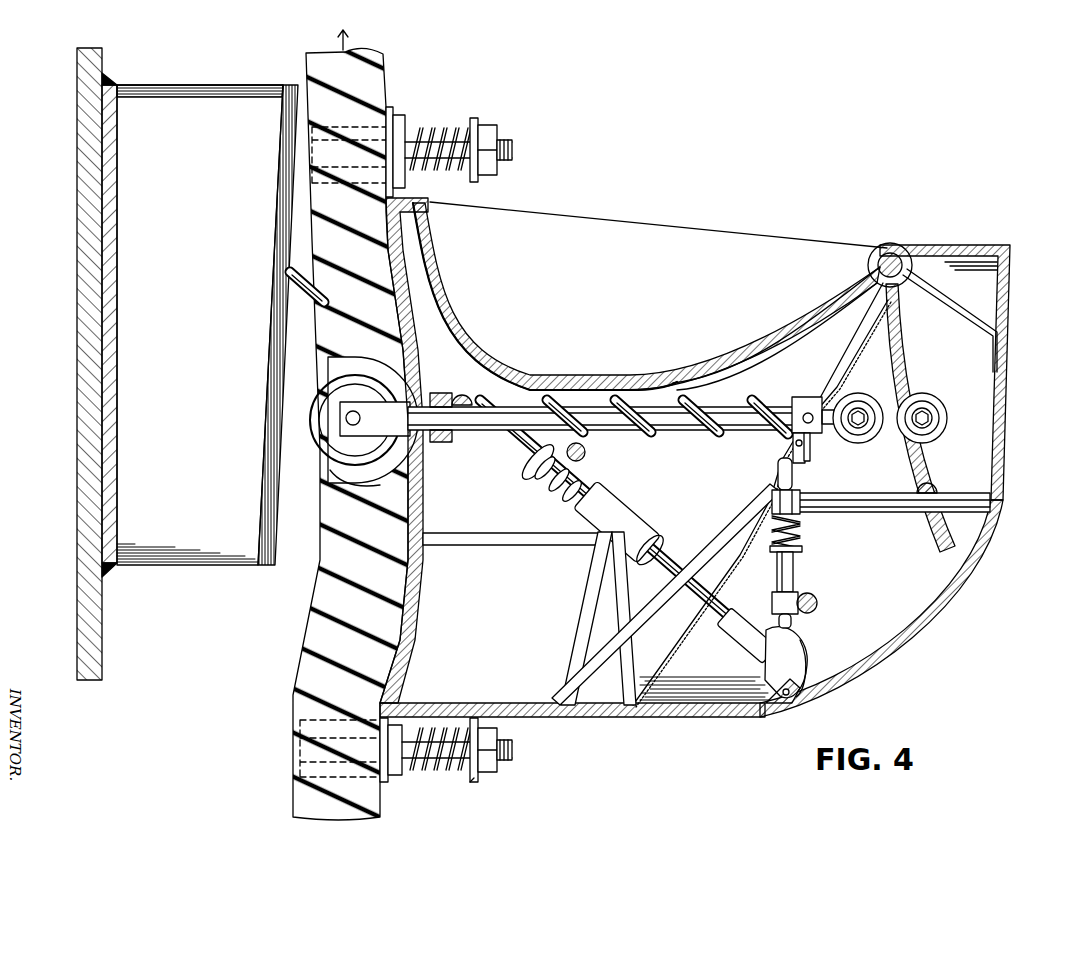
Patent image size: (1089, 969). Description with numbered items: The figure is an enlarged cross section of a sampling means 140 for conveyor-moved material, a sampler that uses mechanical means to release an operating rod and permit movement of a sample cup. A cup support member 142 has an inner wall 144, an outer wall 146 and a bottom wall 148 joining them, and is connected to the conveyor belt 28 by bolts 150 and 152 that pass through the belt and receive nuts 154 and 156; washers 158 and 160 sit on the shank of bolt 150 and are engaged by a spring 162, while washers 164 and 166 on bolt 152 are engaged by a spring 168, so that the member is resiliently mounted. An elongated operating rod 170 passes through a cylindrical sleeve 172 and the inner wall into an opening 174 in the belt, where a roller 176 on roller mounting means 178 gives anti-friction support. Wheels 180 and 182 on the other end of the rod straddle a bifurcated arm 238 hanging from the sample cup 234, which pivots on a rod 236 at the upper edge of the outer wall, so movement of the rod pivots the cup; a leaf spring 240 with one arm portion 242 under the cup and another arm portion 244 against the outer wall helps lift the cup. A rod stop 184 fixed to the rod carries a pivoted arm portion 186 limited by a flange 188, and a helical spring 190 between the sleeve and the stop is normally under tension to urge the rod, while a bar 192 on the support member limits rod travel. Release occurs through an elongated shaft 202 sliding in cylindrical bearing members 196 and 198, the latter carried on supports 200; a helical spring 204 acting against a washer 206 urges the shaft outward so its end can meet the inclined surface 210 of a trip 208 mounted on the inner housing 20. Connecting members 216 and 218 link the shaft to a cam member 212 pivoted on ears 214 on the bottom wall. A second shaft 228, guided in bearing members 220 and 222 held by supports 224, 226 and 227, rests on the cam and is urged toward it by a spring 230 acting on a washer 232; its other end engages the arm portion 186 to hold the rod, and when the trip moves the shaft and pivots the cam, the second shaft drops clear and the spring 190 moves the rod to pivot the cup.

The inner housing 20 is at (78, 92).
The conveyor belt 28 is at (386, 68).
The sampling means 140 is at (757, 182).
The cup support member 142 is at (948, 596).
The inner wall 144 is at (420, 600).
The outer wall 146 is at (1008, 442).
The bottom wall 148 is at (638, 712).
The bolt 150 is at (512, 148).
The bolt 152 is at (512, 748).
The nut 154 is at (490, 128).
The nut 156 is at (490, 772).
The washer 158 is at (402, 122).
The washer 160 is at (474, 120).
The spring 162 is at (438, 138).
The washer 164 is at (408, 724).
The washer 166 is at (472, 778).
The spring 168 is at (455, 726).
The operating rod 170 is at (698, 430).
The cylindrical bearing or sleeve 172 is at (445, 443).
The hole or opening 174 is at (334, 472).
The roller 176 is at (318, 400).
The roller mounting means 178 is at (396, 430).
The wheel 180 is at (940, 436).
The wheel 182 is at (856, 443).
The rod stop 184 is at (800, 397).
The arm portion 186 is at (792, 446).
The flange or stop 188 is at (812, 445).
The helical spring 190 is at (585, 433).
The rod or bar 192 is at (582, 460).
The cylindrical bearing member 196 is at (455, 384).
The cylindrical bearing member 198 is at (640, 505).
The supports 200 is at (590, 578).
The elongated shaft 202 is at (290, 277).
The helical spring 204 is at (563, 497).
The washer or annular member 206 is at (528, 474).
The trip or actuating member 208 is at (203, 102).
The inclined surface 210 is at (290, 188).
The cam member 212 is at (805, 678).
The ears or supports 214 is at (776, 705).
The linkage or connecting member 216 is at (752, 641).
The linkage or connecting member 218 is at (758, 615).
The cylindrical bearing member 220 is at (776, 490).
The cylindrical bearing member 222 is at (798, 595).
The support 224 is at (760, 508).
The support 226 is at (872, 507).
The support 227 is at (813, 609).
The second elongated shaft 228 is at (795, 569).
The spring 230 is at (800, 524).
The washer or annular member 232 is at (803, 551).
The sample cup 234 is at (613, 222).
The rod 236 is at (892, 245).
The arm 238 is at (902, 358).
The leaf spring 240 is at (782, 338).
The arm portion 242 is at (765, 355).
The arm portion 244 is at (945, 297).